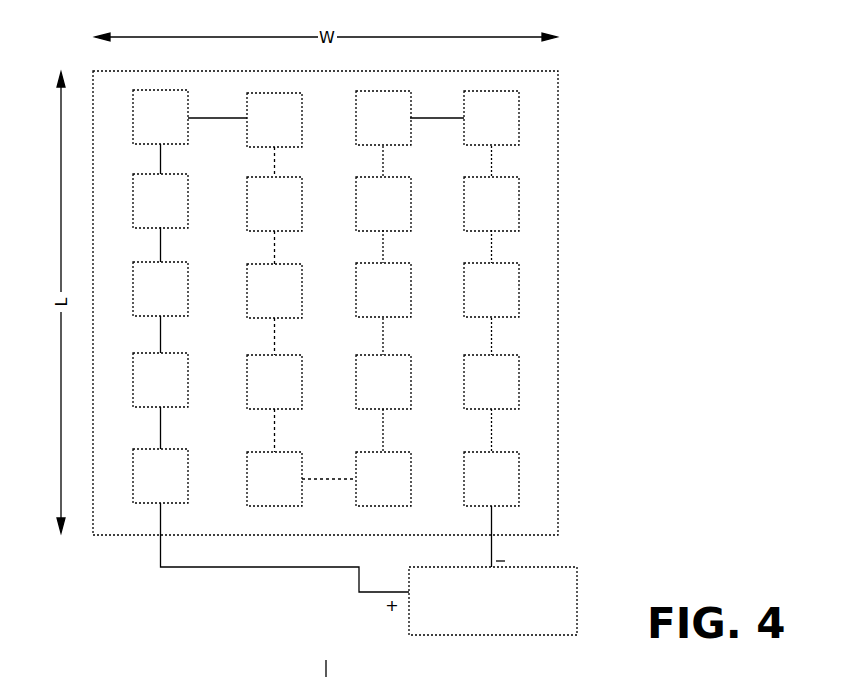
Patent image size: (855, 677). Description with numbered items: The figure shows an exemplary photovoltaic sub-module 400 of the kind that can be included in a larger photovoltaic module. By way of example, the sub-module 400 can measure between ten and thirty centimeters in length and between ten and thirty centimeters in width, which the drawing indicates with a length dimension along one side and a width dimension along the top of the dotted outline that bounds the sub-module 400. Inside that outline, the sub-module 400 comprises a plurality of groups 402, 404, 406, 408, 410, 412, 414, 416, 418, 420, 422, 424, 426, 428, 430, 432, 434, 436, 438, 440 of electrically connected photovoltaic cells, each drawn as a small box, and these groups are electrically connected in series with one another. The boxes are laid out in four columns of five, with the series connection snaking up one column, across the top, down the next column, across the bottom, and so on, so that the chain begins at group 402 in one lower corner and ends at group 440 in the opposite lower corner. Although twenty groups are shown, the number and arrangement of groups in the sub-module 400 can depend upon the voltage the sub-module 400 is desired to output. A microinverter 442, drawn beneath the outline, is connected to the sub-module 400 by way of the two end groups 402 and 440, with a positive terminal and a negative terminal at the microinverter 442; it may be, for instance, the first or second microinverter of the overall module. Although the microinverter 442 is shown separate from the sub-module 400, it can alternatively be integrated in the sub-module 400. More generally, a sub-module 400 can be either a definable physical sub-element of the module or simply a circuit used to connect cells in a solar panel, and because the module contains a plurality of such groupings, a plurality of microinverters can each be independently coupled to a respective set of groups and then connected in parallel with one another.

The photovoltaic sub-module 400 is at (594, 118).
The group of electrically connected photovoltaic cells 402 is at (143, 485).
The group of electrically connected photovoltaic cells 404 is at (143, 389).
The group of electrically connected photovoltaic cells 406 is at (143, 298).
The group of electrically connected photovoltaic cells 408 is at (143, 210).
The group of electrically connected photovoltaic cells 410 is at (143, 126).
The group of electrically connected photovoltaic cells 412 is at (257, 129).
The group of electrically connected photovoltaic cells 414 is at (257, 213).
The group of electrically connected photovoltaic cells 416 is at (257, 300).
The group of electrically connected photovoltaic cells 418 is at (257, 391).
The group of electrically connected photovoltaic cells 420 is at (257, 488).
The group of electrically connected photovoltaic cells 422 is at (366, 488).
The group of electrically connected photovoltaic cells 424 is at (366, 391).
The group of electrically connected photovoltaic cells 426 is at (366, 299).
The group of electrically connected photovoltaic cells 428 is at (366, 213).
The group of electrically connected photovoltaic cells 430 is at (366, 127).
The group of electrically connected photovoltaic cells 432 is at (474, 127).
The group of electrically connected photovoltaic cells 434 is at (474, 213).
The group of electrically connected photovoltaic cells 436 is at (474, 299).
The group of electrically connected photovoltaic cells 438 is at (474, 391).
The group of electrically connected photovoltaic cells 440 is at (474, 488).
The microinverter 442 is at (560, 566).